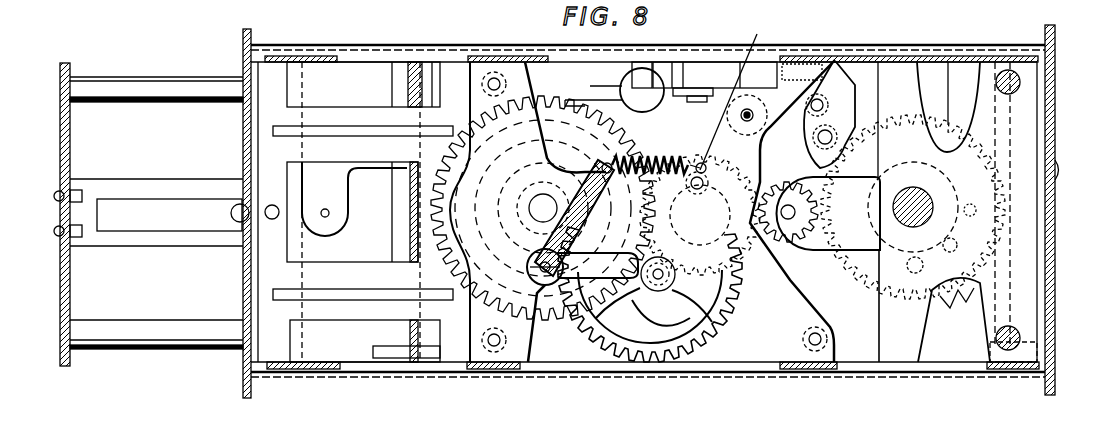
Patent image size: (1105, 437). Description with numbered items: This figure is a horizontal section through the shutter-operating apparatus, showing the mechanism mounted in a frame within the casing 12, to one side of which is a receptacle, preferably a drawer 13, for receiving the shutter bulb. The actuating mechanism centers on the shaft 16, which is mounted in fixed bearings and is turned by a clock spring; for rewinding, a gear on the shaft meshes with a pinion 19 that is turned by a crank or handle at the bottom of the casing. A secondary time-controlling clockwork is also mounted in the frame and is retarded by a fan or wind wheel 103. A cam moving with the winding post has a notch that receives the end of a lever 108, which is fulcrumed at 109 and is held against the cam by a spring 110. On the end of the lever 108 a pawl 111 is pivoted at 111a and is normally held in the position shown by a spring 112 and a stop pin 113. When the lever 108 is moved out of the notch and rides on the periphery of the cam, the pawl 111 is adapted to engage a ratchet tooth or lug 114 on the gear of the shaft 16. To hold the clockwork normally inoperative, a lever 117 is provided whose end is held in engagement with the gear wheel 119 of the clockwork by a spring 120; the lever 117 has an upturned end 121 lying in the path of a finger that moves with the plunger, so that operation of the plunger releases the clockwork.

The casing 12 is at (1052, 166).
The drawer 13 is at (58, 107).
The shaft 16 is at (892, 209).
The pinion 19 is at (702, 211).
The fan or wind wheel 103 is at (743, 93).
The lever 108 is at (748, 108).
The fulcrum 109 is at (695, 67).
The spring 110 is at (621, 82).
The pawl 111 is at (850, 109).
The pivot 111a is at (800, 168).
The spring 112 is at (797, 76).
The stop pin 113 is at (830, 110).
The ratchet tooth or lug 114 is at (954, 320).
The lever 117 is at (540, 262).
The gear wheel 119 is at (700, 209).
The spring 120 is at (654, 156).
The upturned end 121 is at (546, 208).